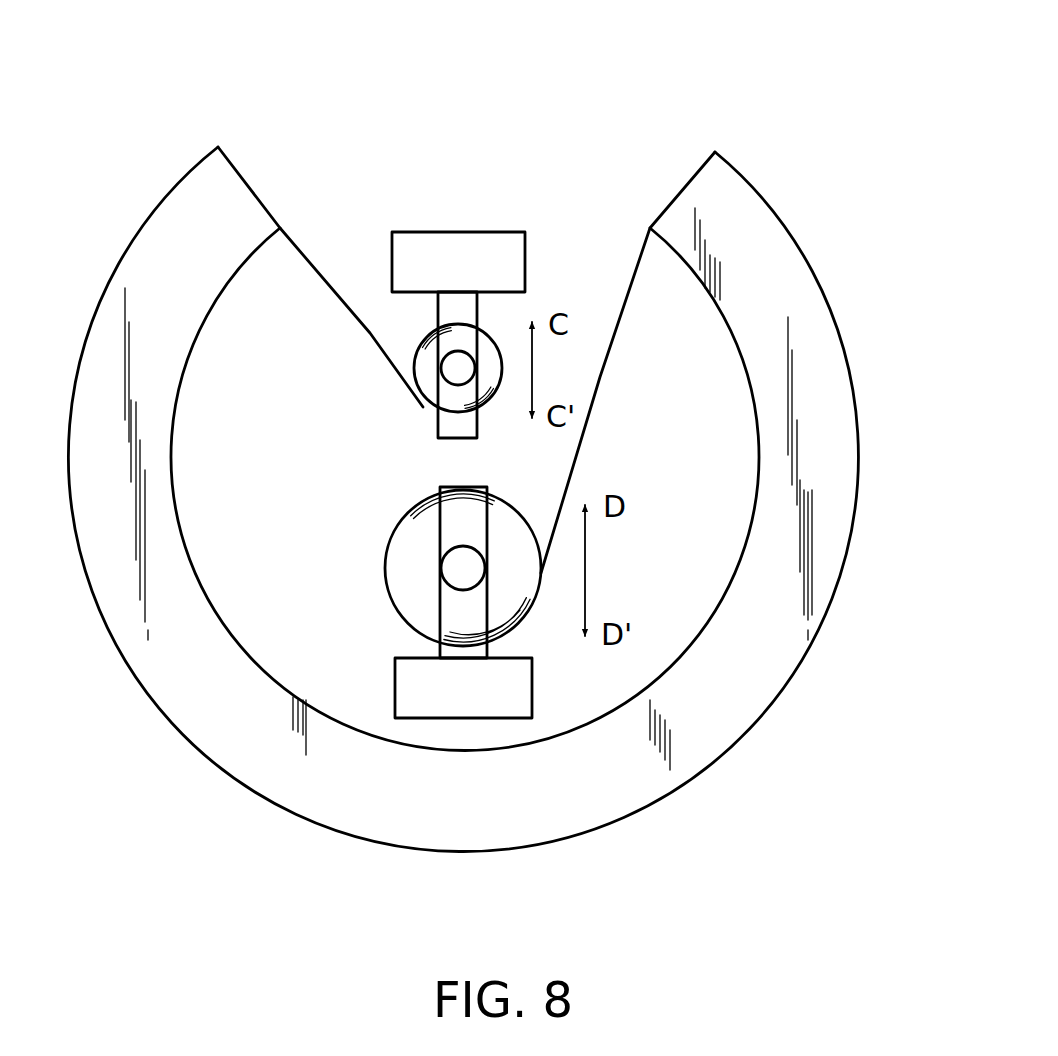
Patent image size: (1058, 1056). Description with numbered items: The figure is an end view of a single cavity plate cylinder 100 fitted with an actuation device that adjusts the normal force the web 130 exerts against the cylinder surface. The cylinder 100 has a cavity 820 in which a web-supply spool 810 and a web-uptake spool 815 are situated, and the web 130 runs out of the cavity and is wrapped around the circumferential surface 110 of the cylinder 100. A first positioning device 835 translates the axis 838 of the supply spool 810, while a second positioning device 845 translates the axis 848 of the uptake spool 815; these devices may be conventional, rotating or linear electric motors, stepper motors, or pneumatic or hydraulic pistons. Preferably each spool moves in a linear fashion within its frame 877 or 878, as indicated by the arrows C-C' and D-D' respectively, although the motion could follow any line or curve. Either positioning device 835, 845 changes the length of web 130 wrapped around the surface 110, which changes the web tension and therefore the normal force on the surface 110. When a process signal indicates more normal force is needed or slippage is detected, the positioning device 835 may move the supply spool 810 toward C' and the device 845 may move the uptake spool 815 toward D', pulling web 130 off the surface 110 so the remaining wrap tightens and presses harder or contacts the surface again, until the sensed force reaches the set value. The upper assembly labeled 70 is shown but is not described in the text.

The cylinder 100 is at (258, 845).
The circumferential surface 110 is at (838, 322).
The web 130 is at (707, 160).
The upper guide assembly 70 is at (420, 216).
The cavity 820 is at (518, 66).
The first positioning device 835 is at (483, 231).
The frame 877 is at (457, 440).
The web-supply spool 810 is at (418, 356).
The axis 838 is at (444, 374).
The frame 878 is at (474, 486).
The web-uptake spool 815 is at (412, 535).
The axis 848 is at (442, 556).
The second positioning device 845 is at (487, 707).